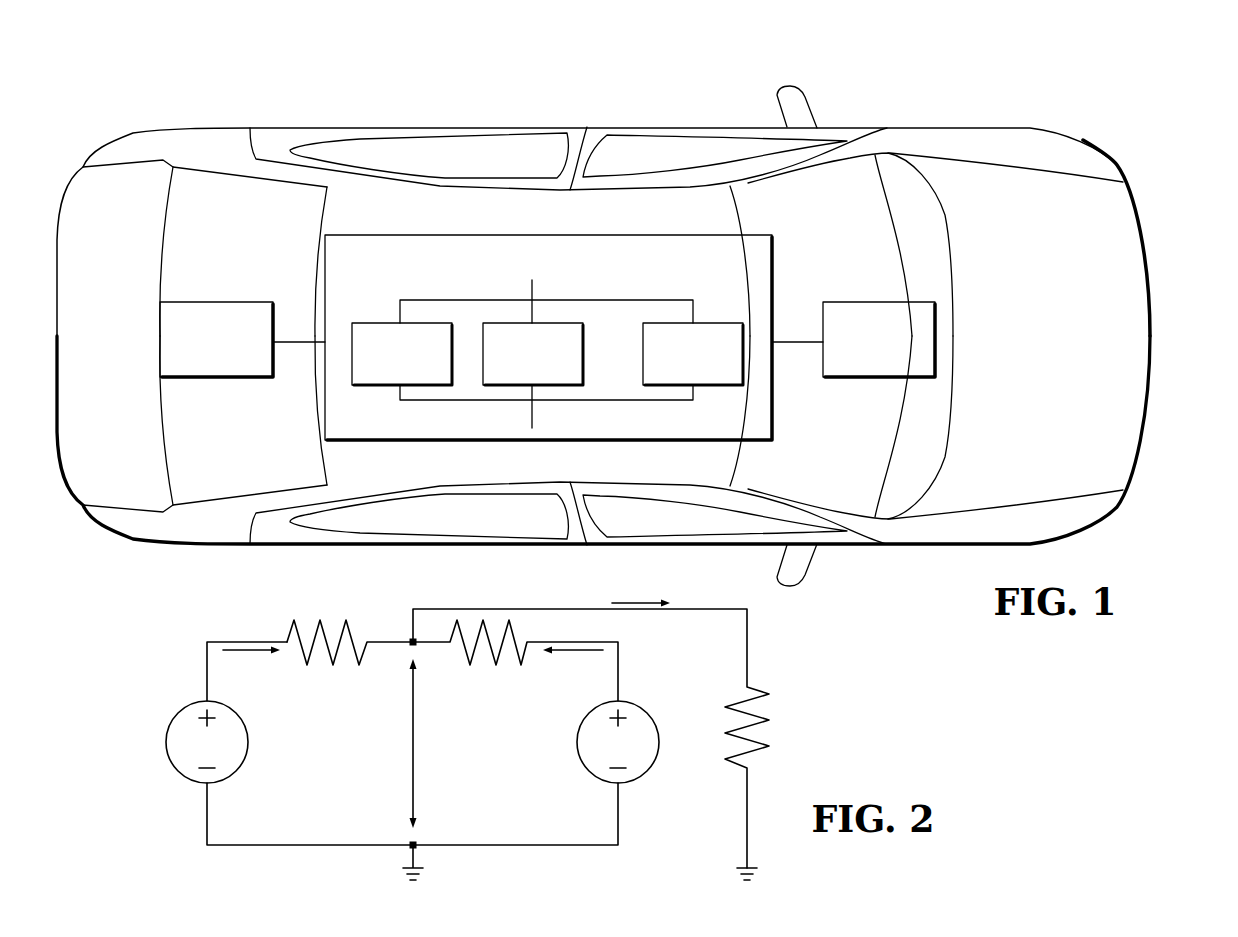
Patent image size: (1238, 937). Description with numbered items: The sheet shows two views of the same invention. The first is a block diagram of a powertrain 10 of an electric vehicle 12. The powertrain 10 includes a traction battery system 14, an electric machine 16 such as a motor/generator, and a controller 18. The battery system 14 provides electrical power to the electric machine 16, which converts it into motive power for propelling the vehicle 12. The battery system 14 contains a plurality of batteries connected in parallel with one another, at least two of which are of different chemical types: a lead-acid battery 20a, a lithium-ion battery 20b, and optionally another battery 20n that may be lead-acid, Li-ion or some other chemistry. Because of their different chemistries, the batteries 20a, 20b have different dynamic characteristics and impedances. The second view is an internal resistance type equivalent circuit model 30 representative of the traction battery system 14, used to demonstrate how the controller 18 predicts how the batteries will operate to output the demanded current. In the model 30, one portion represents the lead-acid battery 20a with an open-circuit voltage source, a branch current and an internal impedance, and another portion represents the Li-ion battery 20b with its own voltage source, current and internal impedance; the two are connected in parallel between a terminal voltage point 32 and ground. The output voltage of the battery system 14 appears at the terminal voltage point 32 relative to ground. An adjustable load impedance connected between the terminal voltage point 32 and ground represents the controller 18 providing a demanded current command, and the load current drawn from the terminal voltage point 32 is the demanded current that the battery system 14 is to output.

In FIG. 1, the powertrain 10 is at (126, 118).
In FIG. 1, the electric vehicle 12 is at (953, 547).
In FIG. 1, the traction battery system 14 is at (548, 321).
In FIG. 2, the traction battery system 14 is at (197, 807).
In FIG. 1, the electric machine 16 is at (182, 300).
In FIG. 1, the controller 18 is at (840, 300).
In FIG. 1, the lead-acid battery 20a is at (387, 320).
In FIG. 2, the lead-acid battery 20a is at (343, 755).
In FIG. 1, the lithium-ion battery 20b is at (585, 352).
In FIG. 2, the lithium-ion battery 20b is at (530, 755).
In FIG. 1, the battery 20n is at (710, 322).
In FIG. 2, the equivalent circuit model 30 is at (470, 723).
In FIG. 2, the terminal voltage point 32 is at (410, 640).